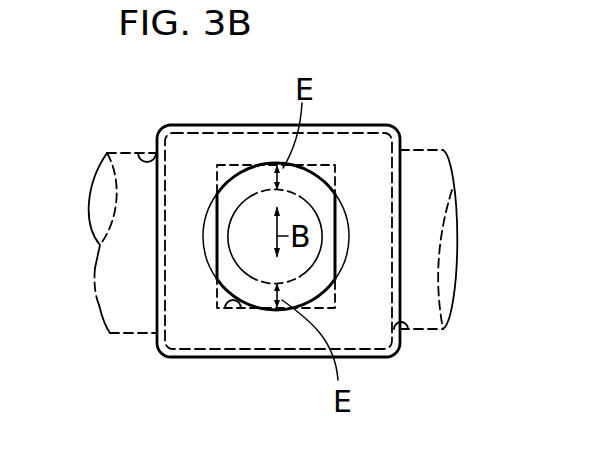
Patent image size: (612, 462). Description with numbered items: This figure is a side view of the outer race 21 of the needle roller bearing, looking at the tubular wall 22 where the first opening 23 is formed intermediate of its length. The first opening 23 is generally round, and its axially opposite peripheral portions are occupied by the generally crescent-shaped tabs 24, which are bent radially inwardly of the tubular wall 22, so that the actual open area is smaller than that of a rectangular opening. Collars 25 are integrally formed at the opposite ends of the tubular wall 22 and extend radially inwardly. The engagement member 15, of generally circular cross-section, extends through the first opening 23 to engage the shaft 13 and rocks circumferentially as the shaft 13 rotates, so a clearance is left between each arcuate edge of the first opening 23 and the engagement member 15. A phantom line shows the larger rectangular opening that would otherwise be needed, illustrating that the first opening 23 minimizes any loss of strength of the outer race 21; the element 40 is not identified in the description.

The shaft 13 is at (128, 180).
The engagement member 15 is at (265, 304).
The outer race 21 is at (198, 126).
The tubular wall 22 is at (347, 150).
The first opening 23 is at (252, 182).
The tabs 24 is at (347, 237).
The collars 25 is at (138, 153).
The projection 40 is at (238, 312).